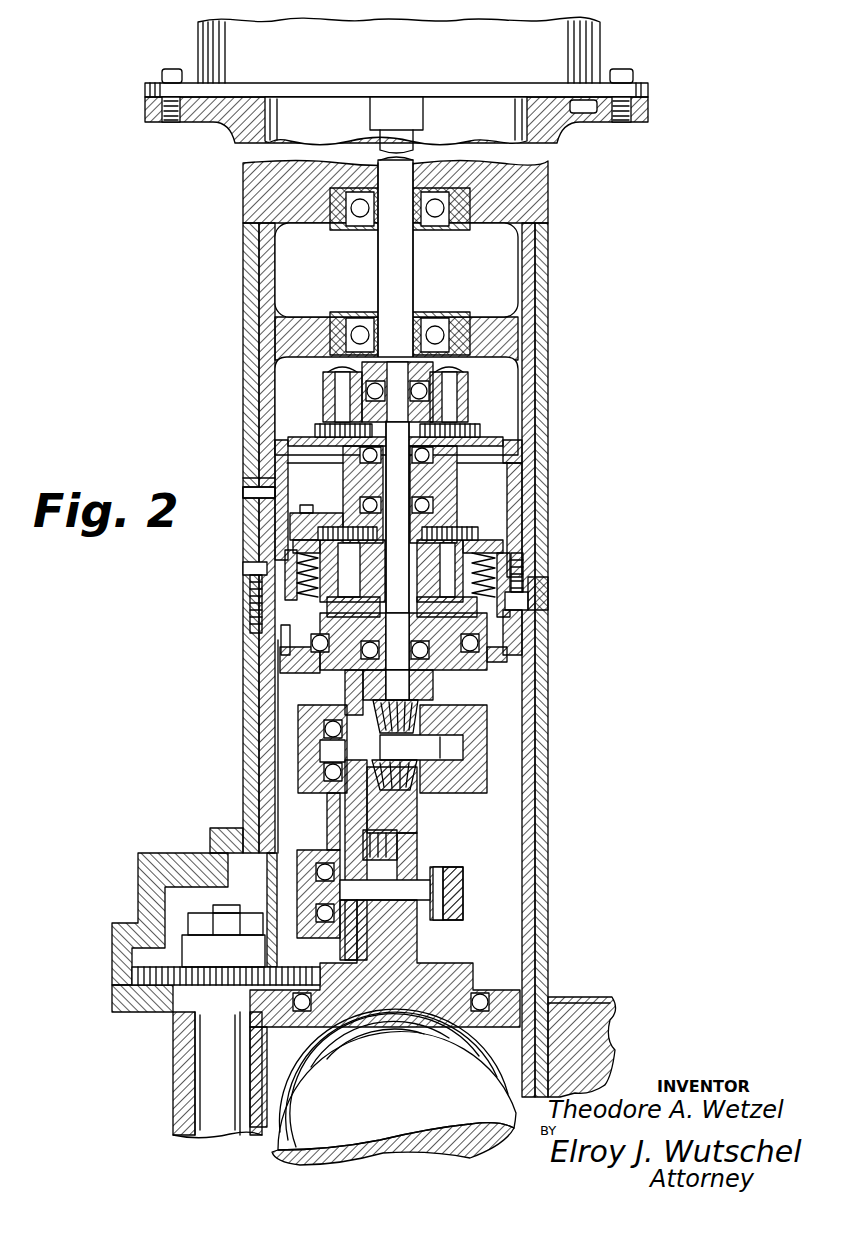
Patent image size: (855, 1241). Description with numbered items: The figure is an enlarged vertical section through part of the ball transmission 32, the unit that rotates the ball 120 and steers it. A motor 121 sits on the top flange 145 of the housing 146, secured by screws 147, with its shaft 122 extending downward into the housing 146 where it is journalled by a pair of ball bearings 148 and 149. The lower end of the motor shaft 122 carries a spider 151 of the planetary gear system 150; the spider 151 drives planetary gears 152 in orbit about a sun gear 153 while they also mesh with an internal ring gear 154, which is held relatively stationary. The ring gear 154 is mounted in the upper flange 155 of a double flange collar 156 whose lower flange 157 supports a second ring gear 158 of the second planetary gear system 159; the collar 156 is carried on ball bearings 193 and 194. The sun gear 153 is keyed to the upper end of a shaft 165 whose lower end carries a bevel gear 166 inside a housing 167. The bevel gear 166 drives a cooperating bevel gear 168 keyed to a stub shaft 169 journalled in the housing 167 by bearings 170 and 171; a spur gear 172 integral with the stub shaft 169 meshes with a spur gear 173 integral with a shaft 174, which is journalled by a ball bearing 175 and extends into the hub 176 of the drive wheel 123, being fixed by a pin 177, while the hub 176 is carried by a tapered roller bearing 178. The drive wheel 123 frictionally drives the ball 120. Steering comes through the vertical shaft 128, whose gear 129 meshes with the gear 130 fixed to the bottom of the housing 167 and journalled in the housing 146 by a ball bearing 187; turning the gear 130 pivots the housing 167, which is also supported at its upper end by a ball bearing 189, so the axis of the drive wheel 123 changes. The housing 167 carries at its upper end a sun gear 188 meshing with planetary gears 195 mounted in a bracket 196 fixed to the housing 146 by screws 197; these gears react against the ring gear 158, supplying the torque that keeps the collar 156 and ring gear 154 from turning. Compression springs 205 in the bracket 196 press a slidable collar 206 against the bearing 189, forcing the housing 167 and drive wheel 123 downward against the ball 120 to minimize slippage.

The ball transmission 32 is at (584, 699).
The ball 120 is at (460, 1087).
The motor 121 is at (577, 43).
The motor shaft 122 is at (400, 243).
The drive wheel 123 is at (390, 823).
The vertical shaft 128 is at (223, 1123).
The gear 129 is at (132, 975).
The gear 130 is at (443, 973).
The top flange 145 is at (205, 124).
The housing 146 is at (535, 374).
The screws 147 is at (162, 73).
The ball bearing 148 is at (366, 222).
The ball bearing 149 is at (437, 330).
The planetary gear system 150 is at (490, 372).
The spider 151 is at (330, 378).
The planetary gears 152 is at (323, 414).
The sun gear 153 is at (455, 420).
The internal ring gear 154 is at (288, 430).
The upper flange 155 is at (243, 448).
The double flange collar 156 is at (275, 478).
The lower flange 157 is at (275, 498).
The second ring gear 158 is at (290, 528).
The planetary gear system 159 is at (512, 517).
The shaft 165 is at (398, 681).
The bevel gear 166 is at (400, 713).
The housing 167 is at (310, 714).
The bevel gear 168 is at (400, 756).
The stub shaft 169 is at (452, 750).
The bearing 170 is at (322, 737).
The bearing 171 is at (458, 736).
The spur gear 172 is at (345, 684).
The spur gear 173 is at (340, 940).
The shaft 174 is at (405, 897).
The ball bearing 175 is at (318, 850).
The hub 176 is at (463, 911).
The pin 177 is at (463, 874).
The tapered roller bearing 178 is at (398, 839).
The ball bearing 187 is at (488, 995).
The sun gear 188 is at (458, 520).
The ball bearing 189 is at (472, 654).
The ball bearing 193 is at (352, 470).
The ball bearing 194 is at (348, 494).
The planetary gears 195 is at (450, 522).
The bracket 196 is at (546, 591).
The screws 197 is at (243, 568).
The compression springs 205 is at (512, 558).
The collar 206 is at (510, 625).